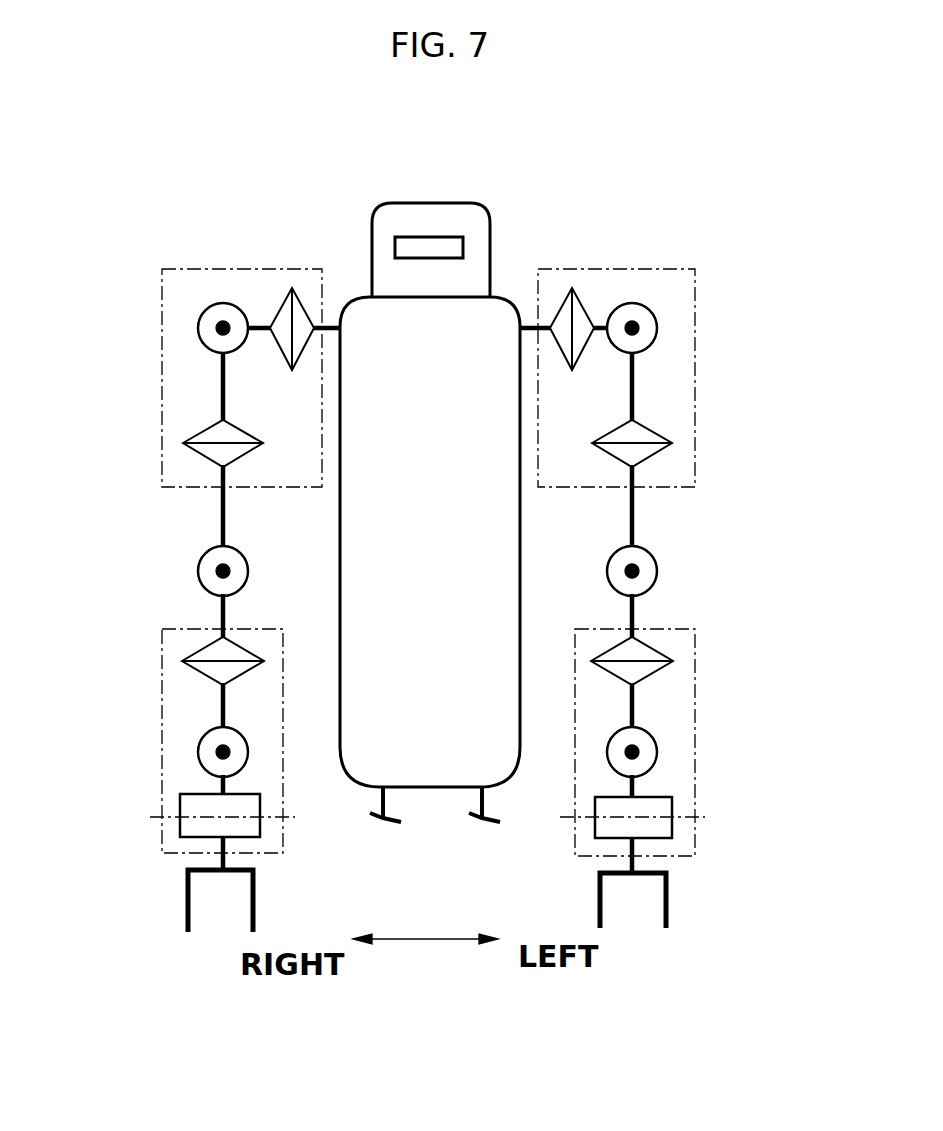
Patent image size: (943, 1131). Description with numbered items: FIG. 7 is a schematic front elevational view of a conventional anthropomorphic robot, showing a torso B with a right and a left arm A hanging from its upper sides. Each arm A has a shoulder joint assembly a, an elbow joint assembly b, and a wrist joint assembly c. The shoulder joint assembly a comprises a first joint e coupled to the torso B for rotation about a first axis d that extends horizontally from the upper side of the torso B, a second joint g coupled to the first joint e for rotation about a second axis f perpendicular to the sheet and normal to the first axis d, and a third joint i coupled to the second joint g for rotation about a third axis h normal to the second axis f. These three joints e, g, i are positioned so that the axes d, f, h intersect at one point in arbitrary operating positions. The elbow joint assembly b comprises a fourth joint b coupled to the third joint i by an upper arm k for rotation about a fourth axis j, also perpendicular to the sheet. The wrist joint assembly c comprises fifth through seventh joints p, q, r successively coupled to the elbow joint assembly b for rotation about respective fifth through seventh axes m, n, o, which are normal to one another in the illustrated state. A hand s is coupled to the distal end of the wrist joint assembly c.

The arm A is at (135, 390).
The torso B is at (340, 531).
The shoulder joint assembly a is at (162, 269).
The elbow joint assembly b is at (200, 560).
The wrist joint assembly c is at (150, 827).
The first axis d is at (332, 322).
The first joint e is at (284, 310).
The second axis f is at (224, 322).
The second joint g is at (217, 305).
The third axis h is at (221, 368).
The third joint i is at (205, 449).
The fourth axis j is at (218, 573).
The upper arm k is at (221, 508).
The fifth axis m is at (221, 708).
The sixth axis n is at (218, 755).
The seventh axis o is at (268, 813).
The fifth joint p is at (198, 670).
The sixth joint q is at (200, 743).
The seventh joint r is at (180, 838).
The hand s is at (253, 892).